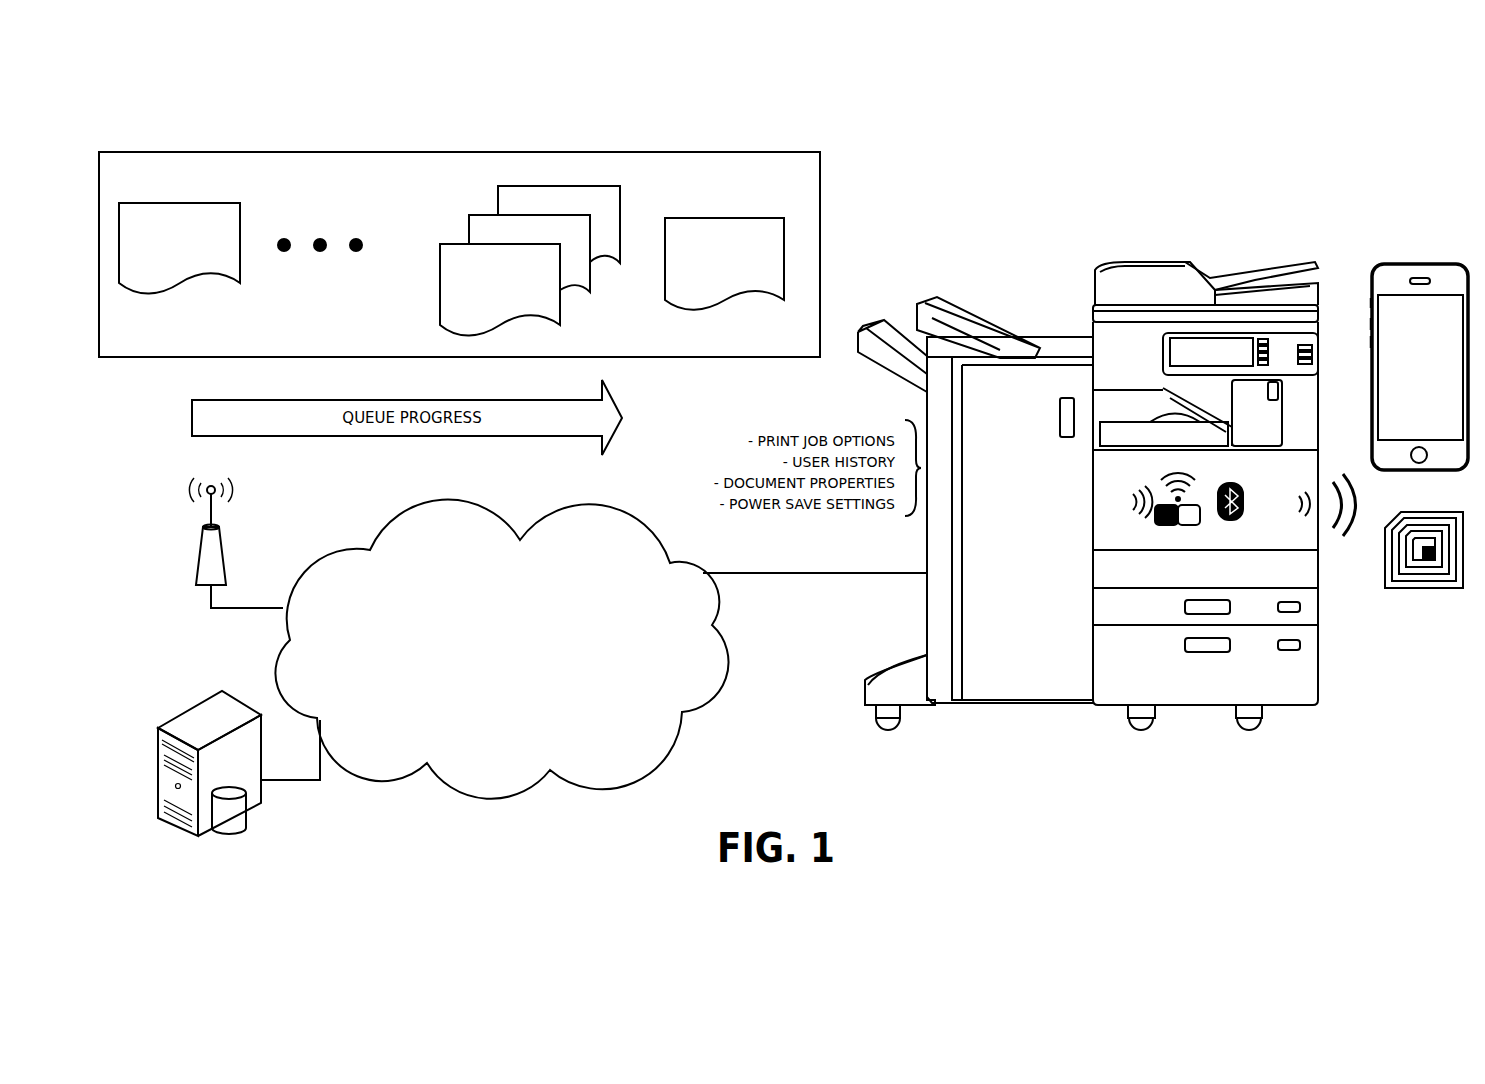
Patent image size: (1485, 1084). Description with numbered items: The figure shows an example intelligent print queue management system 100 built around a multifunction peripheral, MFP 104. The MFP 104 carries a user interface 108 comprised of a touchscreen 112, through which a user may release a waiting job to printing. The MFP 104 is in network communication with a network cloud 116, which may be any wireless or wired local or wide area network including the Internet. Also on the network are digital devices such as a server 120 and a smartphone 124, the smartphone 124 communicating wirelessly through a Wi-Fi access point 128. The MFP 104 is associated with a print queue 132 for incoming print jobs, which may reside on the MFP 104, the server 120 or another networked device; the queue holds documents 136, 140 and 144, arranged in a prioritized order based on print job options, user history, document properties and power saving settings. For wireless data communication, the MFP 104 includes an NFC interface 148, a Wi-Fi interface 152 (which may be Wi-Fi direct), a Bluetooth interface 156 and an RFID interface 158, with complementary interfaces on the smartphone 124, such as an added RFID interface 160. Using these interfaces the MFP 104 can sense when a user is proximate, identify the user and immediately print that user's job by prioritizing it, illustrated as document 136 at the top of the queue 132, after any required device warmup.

The intelligent print queue management system 100 is at (1230, 130).
The MFP 104 is at (1318, 650).
The user interface 108 is at (1318, 345).
The touchscreen 112 is at (1200, 350).
The network cloud 116 is at (676, 735).
The server 120 is at (255, 805).
The smartphone 124 is at (1400, 264).
The Wi-Fi access point 128 is at (226, 550).
The print queue 132 is at (820, 210).
The document 136 is at (725, 217).
The document 140 is at (620, 200).
The document 144 is at (185, 283).
The near field communication interface 148 is at (1115, 510).
The Wi-Fi interface 152 is at (1165, 525).
The Bluetooth interface 156 is at (1228, 520).
The RFID interface 158 is at (1280, 511).
The RFID interface 160 is at (1425, 588).